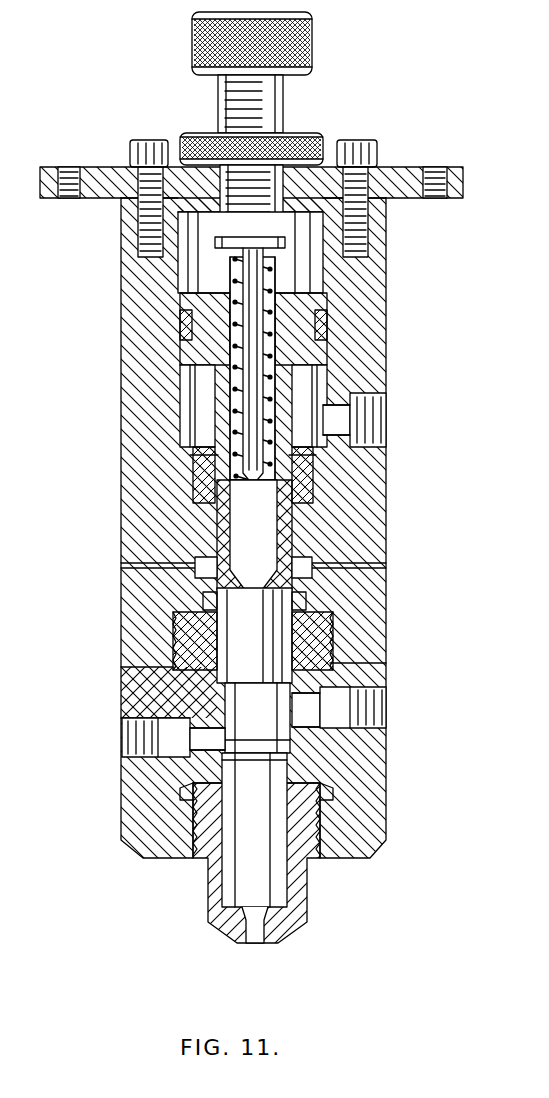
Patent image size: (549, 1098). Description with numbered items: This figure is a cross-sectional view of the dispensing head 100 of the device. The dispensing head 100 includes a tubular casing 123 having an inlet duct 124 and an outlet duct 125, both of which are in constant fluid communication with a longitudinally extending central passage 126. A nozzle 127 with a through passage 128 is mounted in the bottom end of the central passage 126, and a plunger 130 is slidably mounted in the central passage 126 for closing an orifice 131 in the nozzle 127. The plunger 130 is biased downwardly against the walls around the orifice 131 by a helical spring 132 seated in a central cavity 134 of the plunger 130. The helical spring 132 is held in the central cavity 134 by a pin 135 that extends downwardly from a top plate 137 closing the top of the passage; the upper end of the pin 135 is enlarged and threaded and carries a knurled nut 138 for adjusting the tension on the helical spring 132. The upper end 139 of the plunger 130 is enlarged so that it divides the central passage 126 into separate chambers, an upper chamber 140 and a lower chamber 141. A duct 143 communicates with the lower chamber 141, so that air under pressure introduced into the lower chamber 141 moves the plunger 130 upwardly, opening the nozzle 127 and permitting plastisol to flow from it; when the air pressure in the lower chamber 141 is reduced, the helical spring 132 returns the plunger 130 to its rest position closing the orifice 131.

The dispensing head 100 is at (121, 482).
The tubular casing 123 is at (370, 553).
The inlet duct 124 is at (122, 755).
The outlet duct 125 is at (386, 722).
The central passage 126 is at (284, 740).
The nozzle 127 is at (212, 900).
The through passage 128 is at (288, 878).
The plunger 130 is at (232, 622).
The orifice 131 is at (263, 940).
The helical spring 132 is at (272, 360).
The central cavity 134 is at (272, 520).
The pin 135 is at (250, 280).
The top plate 137 is at (98, 167).
The knurled nut 138 is at (283, 108).
The upper end of the plunger 139 is at (193, 357).
The upper chamber 140 is at (178, 270).
The lower chamber 141 is at (195, 407).
The duct 143 is at (368, 420).